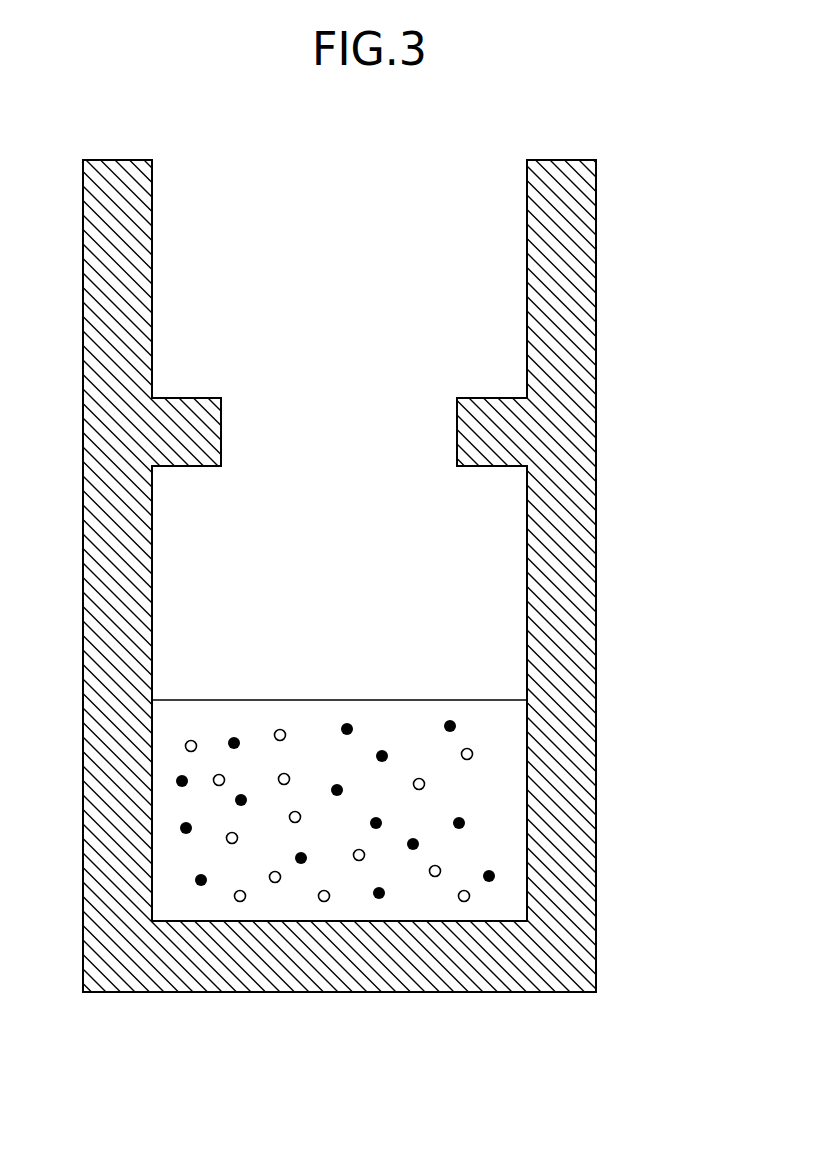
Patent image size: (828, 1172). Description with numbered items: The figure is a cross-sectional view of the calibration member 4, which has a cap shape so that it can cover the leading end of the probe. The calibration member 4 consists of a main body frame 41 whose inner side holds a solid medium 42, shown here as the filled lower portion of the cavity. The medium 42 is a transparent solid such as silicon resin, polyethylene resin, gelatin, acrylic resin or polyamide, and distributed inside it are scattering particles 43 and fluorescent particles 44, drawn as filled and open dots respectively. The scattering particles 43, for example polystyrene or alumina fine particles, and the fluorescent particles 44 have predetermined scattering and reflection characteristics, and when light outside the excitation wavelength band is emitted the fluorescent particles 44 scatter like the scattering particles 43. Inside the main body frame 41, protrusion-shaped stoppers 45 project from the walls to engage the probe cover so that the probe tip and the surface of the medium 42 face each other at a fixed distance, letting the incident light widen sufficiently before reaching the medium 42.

The calibration member 4 is at (681, 189).
The main body frame 41 is at (562, 533).
The medium 42 is at (487, 789).
The scattering particles 43 is at (457, 726).
The fluorescent particles 44 is at (470, 896).
The stopper 45 is at (196, 391).